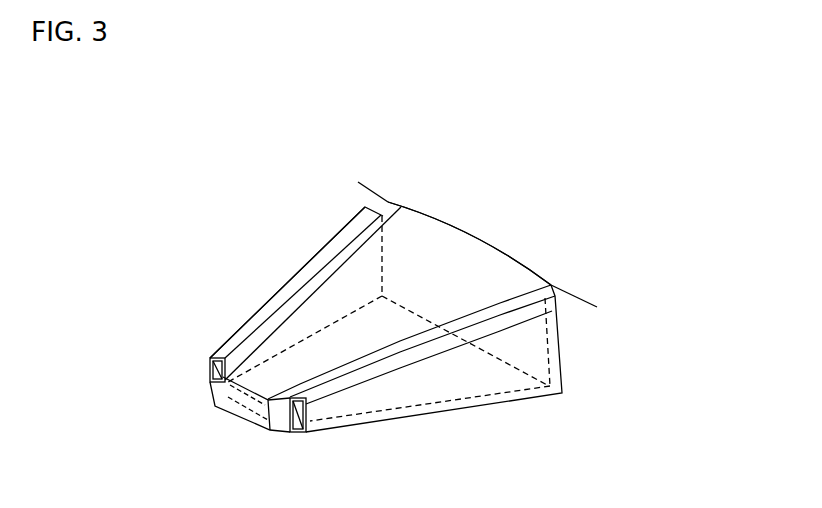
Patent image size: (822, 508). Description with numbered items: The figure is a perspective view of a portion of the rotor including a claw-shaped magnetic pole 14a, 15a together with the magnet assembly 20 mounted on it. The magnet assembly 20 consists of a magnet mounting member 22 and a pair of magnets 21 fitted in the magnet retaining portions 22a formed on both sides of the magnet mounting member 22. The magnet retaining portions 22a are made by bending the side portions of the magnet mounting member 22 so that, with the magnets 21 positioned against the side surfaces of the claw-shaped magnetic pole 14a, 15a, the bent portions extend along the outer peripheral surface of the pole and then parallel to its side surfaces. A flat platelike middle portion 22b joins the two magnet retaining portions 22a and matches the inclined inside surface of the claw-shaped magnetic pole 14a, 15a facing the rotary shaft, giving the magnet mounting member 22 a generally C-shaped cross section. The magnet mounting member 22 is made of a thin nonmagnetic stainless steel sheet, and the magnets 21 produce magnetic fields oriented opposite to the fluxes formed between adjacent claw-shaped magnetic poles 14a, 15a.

The magnet assembly 20 is at (221, 264).
The magnet 21 is at (210, 373).
The magnet mounting member 22 is at (315, 253).
The magnet retaining portion 22a is at (236, 336).
The middle portion 22b is at (246, 399).
The claw-shaped magnetic pole 14a is at (490, 200).
The claw-shaped magnetic pole 15a is at (469, 243).